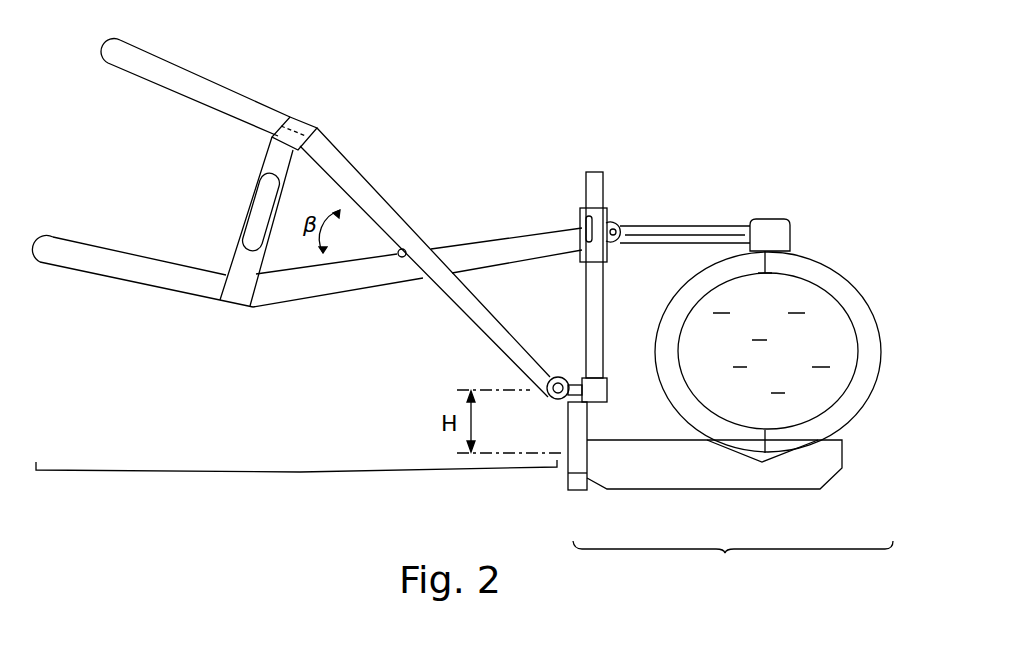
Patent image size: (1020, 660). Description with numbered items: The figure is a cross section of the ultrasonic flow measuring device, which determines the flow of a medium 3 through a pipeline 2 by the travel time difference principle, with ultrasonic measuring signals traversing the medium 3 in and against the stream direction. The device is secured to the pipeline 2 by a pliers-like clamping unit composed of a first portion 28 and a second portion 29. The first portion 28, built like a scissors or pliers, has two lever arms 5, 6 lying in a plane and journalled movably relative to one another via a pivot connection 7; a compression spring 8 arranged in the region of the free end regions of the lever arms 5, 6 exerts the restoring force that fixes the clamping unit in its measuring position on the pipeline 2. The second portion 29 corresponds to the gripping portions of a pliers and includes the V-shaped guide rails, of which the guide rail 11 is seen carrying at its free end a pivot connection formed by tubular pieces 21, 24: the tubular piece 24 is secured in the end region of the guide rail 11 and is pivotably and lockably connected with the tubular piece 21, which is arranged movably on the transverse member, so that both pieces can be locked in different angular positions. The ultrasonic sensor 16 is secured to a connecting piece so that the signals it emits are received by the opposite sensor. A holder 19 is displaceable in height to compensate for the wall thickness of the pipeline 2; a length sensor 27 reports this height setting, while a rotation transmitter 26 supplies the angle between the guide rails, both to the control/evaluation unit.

The pipeline 2 is at (781, 352).
The medium 3 is at (780, 378).
The lever arm 5 is at (110, 262).
The lever arm 6 is at (193, 80).
The pivot connection 7 is at (405, 247).
The compression spring 8 is at (246, 246).
The guide rail 11 is at (587, 338).
The ultrasonic sensor 16 is at (790, 224).
The holder 19 is at (681, 474).
The tubular piece 21 is at (617, 222).
The tubular piece 24 is at (581, 214).
The rotation transmitter 26 is at (633, 329).
The length sensor 27 is at (608, 378).
The first portion 28 is at (303, 476).
The second portion 29 is at (725, 553).